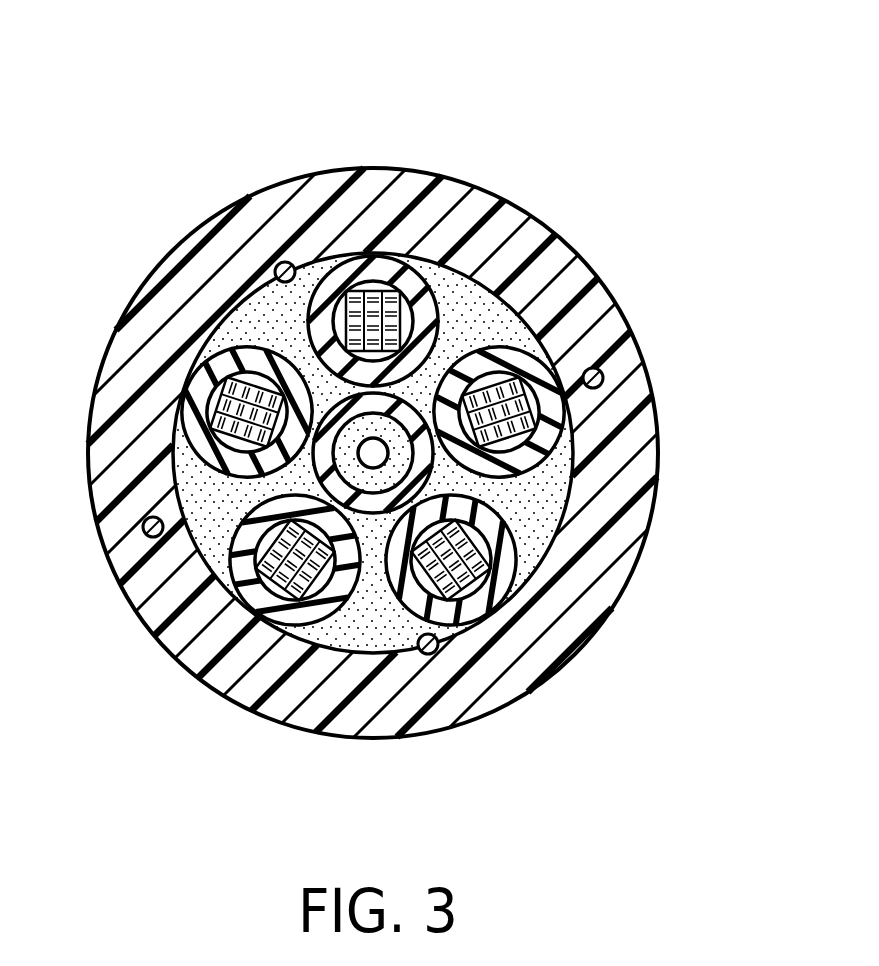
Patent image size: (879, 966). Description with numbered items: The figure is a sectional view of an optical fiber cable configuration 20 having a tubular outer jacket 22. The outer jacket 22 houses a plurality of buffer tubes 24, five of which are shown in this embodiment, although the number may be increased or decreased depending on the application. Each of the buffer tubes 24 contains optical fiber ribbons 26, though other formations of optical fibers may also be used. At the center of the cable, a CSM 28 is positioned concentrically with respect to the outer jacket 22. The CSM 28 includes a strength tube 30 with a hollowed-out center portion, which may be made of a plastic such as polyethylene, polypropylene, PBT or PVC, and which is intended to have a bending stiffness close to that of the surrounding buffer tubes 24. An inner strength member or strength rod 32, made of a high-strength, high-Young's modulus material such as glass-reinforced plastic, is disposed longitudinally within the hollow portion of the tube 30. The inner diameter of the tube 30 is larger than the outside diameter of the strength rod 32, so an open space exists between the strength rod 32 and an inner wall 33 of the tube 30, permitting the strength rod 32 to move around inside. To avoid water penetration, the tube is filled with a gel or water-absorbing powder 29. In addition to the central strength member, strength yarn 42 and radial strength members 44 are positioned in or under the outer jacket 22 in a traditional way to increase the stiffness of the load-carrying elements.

The optical fiber cable configuration 20 is at (484, 148).
The outer jacket 22 is at (657, 433).
The buffer tube 24 is at (243, 350).
The optical fiber ribbon 26 is at (250, 387).
The CSM 28 is at (375, 540).
The gel or water-absorbing powder 29 is at (397, 467).
The strength tube 30 is at (433, 480).
The strength rod 32 is at (380, 442).
The inner wall 33 is at (197, 527).
The strength yarn 42 is at (281, 264).
The radial strength member 44 is at (600, 368).